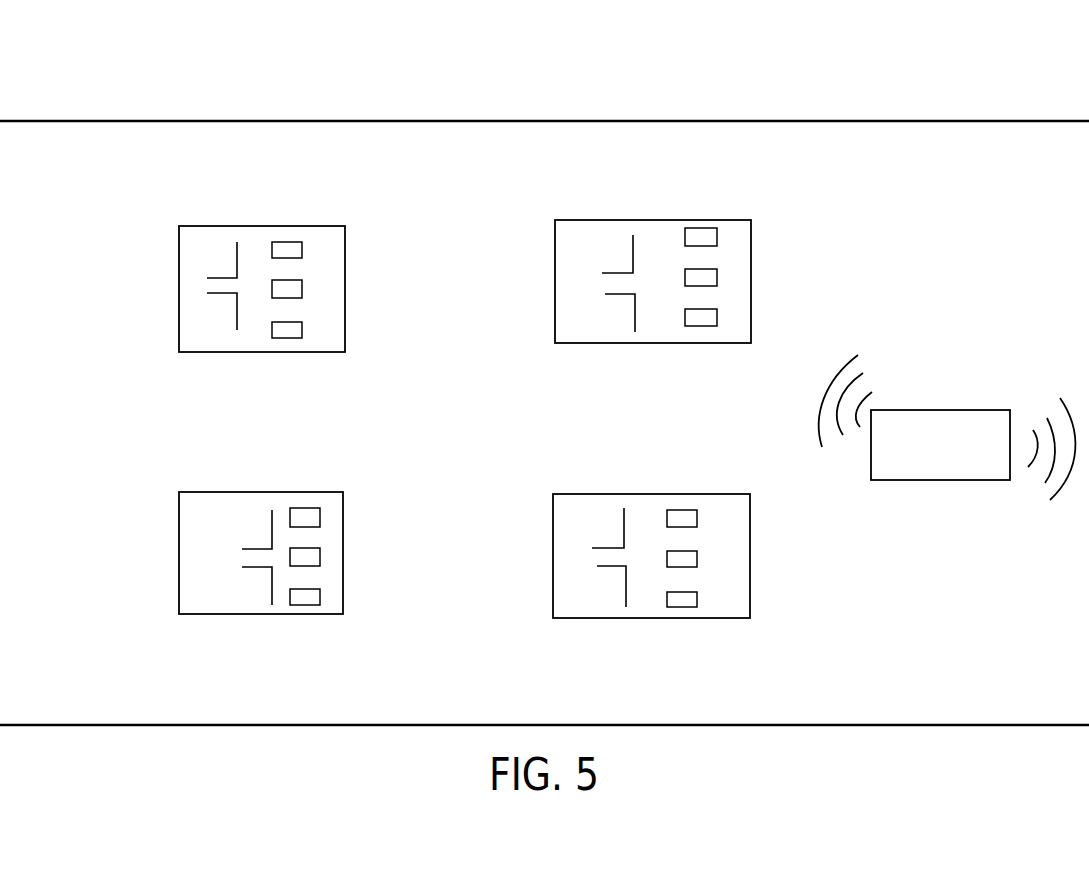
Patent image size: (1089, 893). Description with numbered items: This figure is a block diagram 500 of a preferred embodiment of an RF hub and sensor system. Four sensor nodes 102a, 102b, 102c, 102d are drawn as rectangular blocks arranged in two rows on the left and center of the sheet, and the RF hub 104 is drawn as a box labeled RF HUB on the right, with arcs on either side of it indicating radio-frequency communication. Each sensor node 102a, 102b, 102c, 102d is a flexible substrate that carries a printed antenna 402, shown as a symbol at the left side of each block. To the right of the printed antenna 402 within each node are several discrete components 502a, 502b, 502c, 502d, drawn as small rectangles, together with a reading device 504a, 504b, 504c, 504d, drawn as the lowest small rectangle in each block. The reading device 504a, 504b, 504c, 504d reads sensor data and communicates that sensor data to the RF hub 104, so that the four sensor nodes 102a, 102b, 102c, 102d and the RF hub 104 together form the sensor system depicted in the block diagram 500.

The block diagram 500 is at (222, 93).
The sensor node 102a is at (179, 283).
The sensor node 102b is at (179, 555).
The sensor node 102c is at (555, 238).
The sensor node 102d is at (553, 512).
The printed antenna 402 is at (237, 253).
The discrete components 502a is at (287, 242).
The discrete components 502b is at (303, 508).
The discrete components 502c is at (700, 228).
The discrete components 502d is at (680, 510).
The reading device 504a is at (302, 330).
The reading device 504b is at (320, 600).
The reading device 504c is at (717, 317).
The reading device 504d is at (697, 602).
The RF hub 104 is at (950, 410).